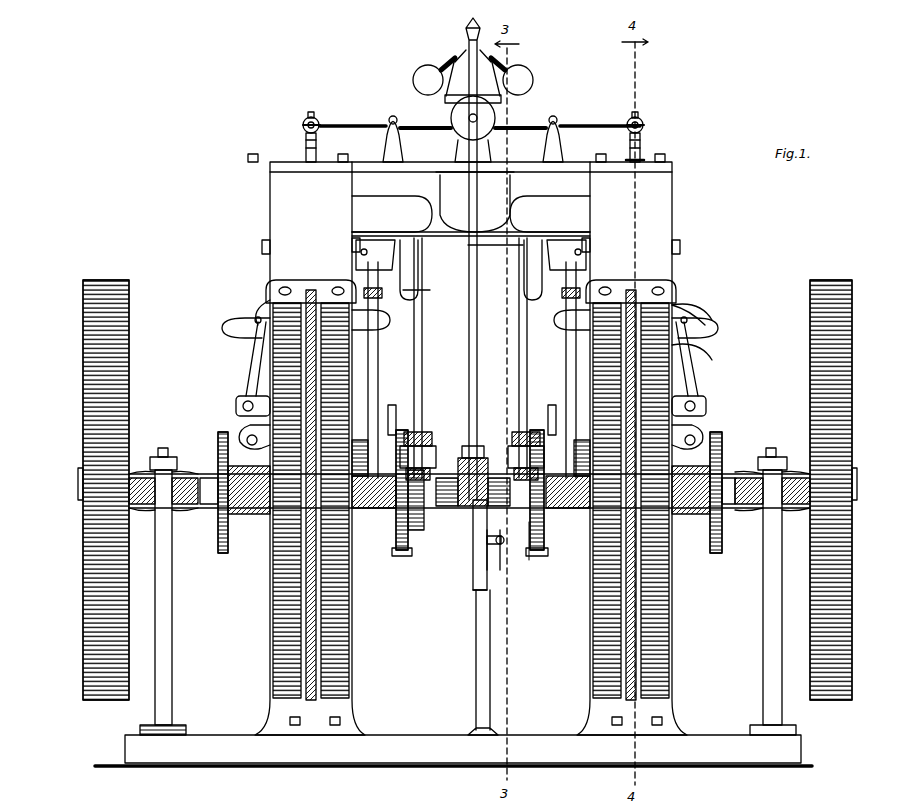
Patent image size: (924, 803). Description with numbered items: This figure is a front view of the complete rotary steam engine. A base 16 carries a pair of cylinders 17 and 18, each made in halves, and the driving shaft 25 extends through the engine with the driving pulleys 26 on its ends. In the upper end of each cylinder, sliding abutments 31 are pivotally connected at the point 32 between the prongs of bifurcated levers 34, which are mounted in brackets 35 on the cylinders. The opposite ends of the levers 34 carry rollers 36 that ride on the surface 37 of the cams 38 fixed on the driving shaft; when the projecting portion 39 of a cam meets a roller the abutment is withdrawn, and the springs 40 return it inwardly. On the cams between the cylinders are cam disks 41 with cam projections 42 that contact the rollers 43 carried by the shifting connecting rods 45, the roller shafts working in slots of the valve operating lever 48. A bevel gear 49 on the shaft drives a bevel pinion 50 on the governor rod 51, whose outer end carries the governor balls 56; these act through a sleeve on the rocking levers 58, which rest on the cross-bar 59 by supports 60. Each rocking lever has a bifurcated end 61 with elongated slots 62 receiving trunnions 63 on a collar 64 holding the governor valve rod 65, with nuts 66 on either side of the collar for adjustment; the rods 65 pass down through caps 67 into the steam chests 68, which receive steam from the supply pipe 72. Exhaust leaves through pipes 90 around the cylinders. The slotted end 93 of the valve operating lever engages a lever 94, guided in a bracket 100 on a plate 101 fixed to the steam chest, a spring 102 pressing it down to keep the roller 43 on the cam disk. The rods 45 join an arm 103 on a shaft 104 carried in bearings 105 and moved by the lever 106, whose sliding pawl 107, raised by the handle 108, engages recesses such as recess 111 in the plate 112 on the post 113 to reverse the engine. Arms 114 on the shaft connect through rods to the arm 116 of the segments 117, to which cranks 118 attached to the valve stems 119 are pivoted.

The base 16 is at (463, 749).
The cylinder 17 is at (355, 668).
The cylinder 18 is at (590, 667).
The driving shaft 25 is at (258, 520).
The driving pulley 26 is at (83, 375).
The sliding abutment 31 is at (690, 312).
The pivot point 32 is at (262, 316).
The bifurcated lever 34 is at (252, 366).
The bracket 35 is at (246, 396).
The roller 36 is at (236, 434).
The cam surface 37 is at (258, 500).
The cam 38 is at (222, 555).
The projecting portion 39 is at (208, 512).
The spring 40 is at (255, 318).
The cam disk 41 is at (412, 536).
The cam projection 42 is at (540, 556).
The roller 43 is at (472, 411).
The shifting connecting rod 45 is at (420, 430).
The valve operating lever 48 is at (422, 397).
The bevel gear 49 is at (424, 501).
The bevel pinion 50 is at (484, 450).
The governor rod 51 is at (478, 386).
The governor ball 56 is at (473, 76).
The rocking lever 58 is at (473, 129).
The cross-bar 59 is at (415, 168).
The support 60 is at (403, 148).
The bifurcated end 61 is at (330, 124).
The elongated slot 62 is at (304, 120).
The trunnion 63 is at (316, 120).
The collar 64 is at (303, 126).
The governor valve rod 65 is at (306, 140).
The nut 66 is at (310, 110).
The cap 67 is at (644, 158).
The steam chest 68 is at (491, 208).
The steam supply pipe 72 is at (471, 214).
The pipe 90 is at (306, 465).
The slotted end 93 is at (505, 222).
The lever 94 is at (463, 268).
The bracket 100 is at (471, 255).
The plate 101 is at (352, 246).
The spring 102 is at (420, 280).
The arm 103 is at (472, 446).
The shaft 104 is at (430, 464).
The bearing 105 is at (476, 483).
The lever 106 is at (473, 572).
The sliding pawl 107 is at (490, 568).
The handle 108 is at (506, 545).
The recess 111 is at (518, 541).
The plate 112 is at (476, 596).
The post 113 is at (476, 640).
The arm 114 is at (477, 458).
The arm 116 is at (378, 389).
The segment 117 is at (472, 292).
The crank 118 is at (501, 290).
The valve stem 119 is at (471, 283).